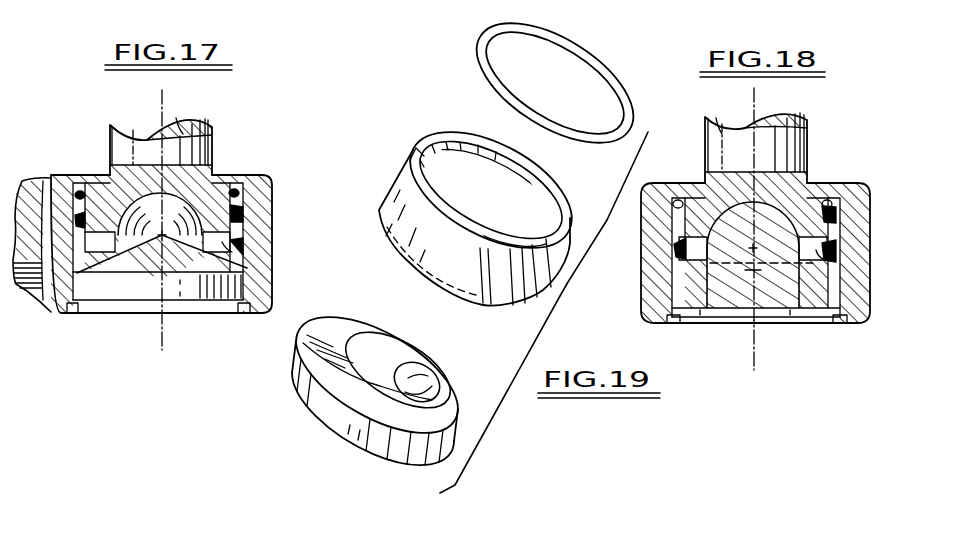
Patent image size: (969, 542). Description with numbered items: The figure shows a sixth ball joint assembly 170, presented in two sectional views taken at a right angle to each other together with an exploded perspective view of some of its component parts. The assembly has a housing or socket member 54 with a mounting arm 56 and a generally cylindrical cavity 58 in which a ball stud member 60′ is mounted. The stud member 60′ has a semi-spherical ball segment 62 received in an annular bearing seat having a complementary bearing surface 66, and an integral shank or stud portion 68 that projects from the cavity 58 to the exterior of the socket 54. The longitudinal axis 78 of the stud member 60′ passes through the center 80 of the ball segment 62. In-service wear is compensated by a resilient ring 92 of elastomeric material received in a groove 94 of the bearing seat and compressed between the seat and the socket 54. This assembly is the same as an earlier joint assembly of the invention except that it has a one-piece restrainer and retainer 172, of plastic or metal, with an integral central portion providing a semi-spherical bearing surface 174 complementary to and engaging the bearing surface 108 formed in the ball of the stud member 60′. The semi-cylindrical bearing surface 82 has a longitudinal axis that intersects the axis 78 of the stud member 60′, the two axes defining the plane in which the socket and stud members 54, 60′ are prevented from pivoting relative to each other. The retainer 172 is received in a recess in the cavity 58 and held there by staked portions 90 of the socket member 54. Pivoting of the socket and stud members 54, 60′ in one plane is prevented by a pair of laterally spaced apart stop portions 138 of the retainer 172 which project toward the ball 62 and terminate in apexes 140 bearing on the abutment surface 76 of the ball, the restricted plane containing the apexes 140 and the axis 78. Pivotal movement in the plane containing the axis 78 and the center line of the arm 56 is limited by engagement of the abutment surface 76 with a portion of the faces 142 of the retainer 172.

In FIG. 17, the housing or socket member 54 is at (261, 165).
In FIG. 18, the housing or socket member 54 is at (651, 322).
In FIG. 17, the mounting arm 56 is at (40, 178).
In FIG. 17, the cavity 58 is at (241, 283).
In FIG. 18, the cavity 58 is at (836, 287).
In FIG. 17, the ball stud member 60′ is at (136, 139).
In FIG. 18, the ball stud member 60′ is at (810, 125).
In FIG. 17, the semi-spherical ball segment 62 is at (231, 197).
In FIG. 18, the semi-spherical ball segment 62 is at (842, 212).
In FIG. 17, the bearing surface 66 is at (246, 267).
In FIG. 19, the bearing surface 66 is at (531, 210).
In FIG. 17, the shank or stud portion 68 is at (183, 130).
In FIG. 18, the shank or stud portion 68 is at (720, 128).
In FIG. 17, the abutment surface 76 is at (233, 240).
In FIG. 18, the abutment surface 76 is at (812, 300).
In FIG. 17, the longitudinal axis 78 is at (162, 104).
In FIG. 18, the longitudinal axis 78 is at (755, 107).
In FIG. 17, the center 80 is at (162, 235).
In FIG. 18, the bearing surface 82 is at (734, 337).
In FIG. 17, the staked portions 90 is at (238, 315).
In FIG. 18, the staked portions 90 is at (838, 322).
In FIG. 17, the resilient ring 92 is at (80, 187).
In FIG. 18, the resilient ring 92 is at (833, 206).
In FIG. 19, the resilient ring 92 is at (490, 80).
In FIG. 19, the groove 94 is at (416, 150).
In FIG. 17, the semi-spherical bearing surface 108 is at (175, 182).
In FIG. 18, the semi-spherical bearing surface 108 is at (737, 210).
In FIG. 18, the stop portions 138 is at (680, 303).
In FIG. 19, the stop portions 138 is at (376, 397).
In FIG. 18, the apexes 140 is at (690, 203).
In FIG. 19, the apexes 140 is at (410, 347).
In FIG. 17, the faces 142 is at (63, 283).
In FIG. 19, the faces 142 is at (353, 333).
In FIG. 17, the sixth joint assembly 170 is at (89, 99).
In FIG. 18, the sixth joint assembly 170 is at (810, 146).
In FIG. 17, the one-piece restrainer and retainer 172 is at (113, 300).
In FIG. 18, the one-piece restrainer and retainer 172 is at (730, 307).
In FIG. 19, the one-piece restrainer and retainer 172 is at (291, 396).
In FIG. 17, the semi-spherical bearing surface 174 is at (162, 235).
In FIG. 18, the semi-spherical bearing surface 174 is at (697, 308).
In FIG. 19, the semi-spherical bearing surface 174 is at (404, 362).